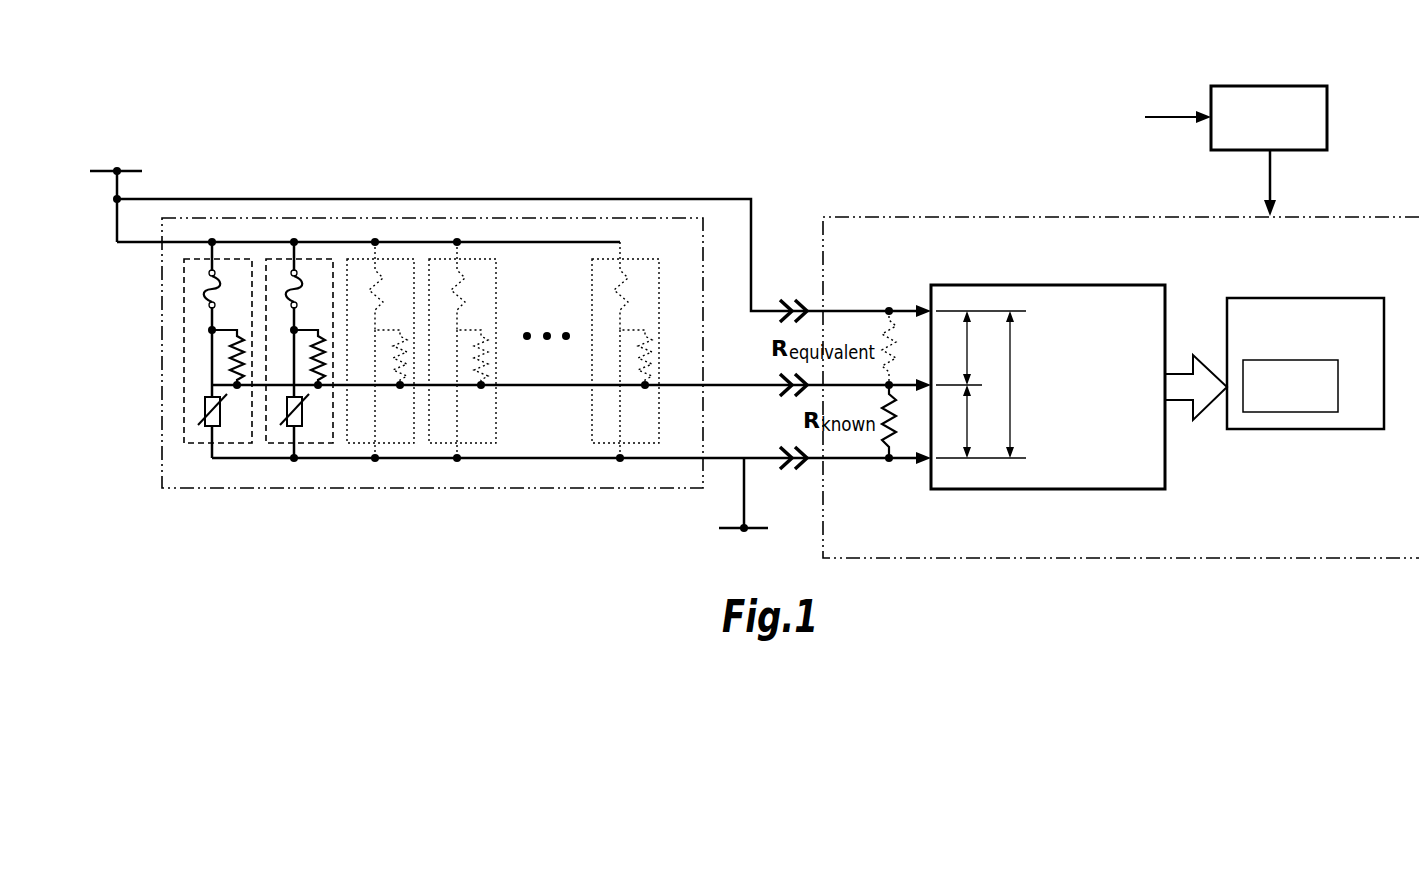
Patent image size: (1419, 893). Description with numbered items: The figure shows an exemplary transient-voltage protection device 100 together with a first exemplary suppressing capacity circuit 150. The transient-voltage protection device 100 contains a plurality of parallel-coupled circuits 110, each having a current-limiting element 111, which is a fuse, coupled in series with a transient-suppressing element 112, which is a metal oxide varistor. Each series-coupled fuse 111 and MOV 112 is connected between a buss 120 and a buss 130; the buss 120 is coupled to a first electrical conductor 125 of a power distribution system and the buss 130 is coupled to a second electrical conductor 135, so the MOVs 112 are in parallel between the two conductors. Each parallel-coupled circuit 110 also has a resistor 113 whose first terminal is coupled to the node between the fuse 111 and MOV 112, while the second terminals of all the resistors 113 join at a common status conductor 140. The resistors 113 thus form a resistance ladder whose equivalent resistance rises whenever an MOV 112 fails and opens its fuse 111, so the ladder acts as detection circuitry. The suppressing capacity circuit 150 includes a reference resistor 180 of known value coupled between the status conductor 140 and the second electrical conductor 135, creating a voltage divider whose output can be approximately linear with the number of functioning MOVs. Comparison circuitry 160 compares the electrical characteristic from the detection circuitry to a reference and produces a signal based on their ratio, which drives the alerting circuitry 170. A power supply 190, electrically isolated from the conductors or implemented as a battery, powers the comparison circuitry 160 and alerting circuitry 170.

The transient-voltage protection device 100 is at (208, 488).
The parallel-coupled circuit 110 is at (176, 350).
The current-limiting element 111 is at (208, 291).
The transient-suppressing element 112 is at (203, 399).
The resistor 113 is at (230, 364).
The buss 120 is at (529, 241).
The first electrical conductor 125 is at (133, 171).
The buss 130 is at (716, 457).
The second electrical conductor 135 is at (727, 534).
The status conductor 140 is at (722, 384).
The suppressing capacity circuit 150 is at (1350, 216).
The comparison circuitry 160 is at (1065, 285).
The alerting circuitry 170 is at (1302, 298).
The reference resistor 180 is at (898, 425).
The power supply 190 is at (1291, 86).